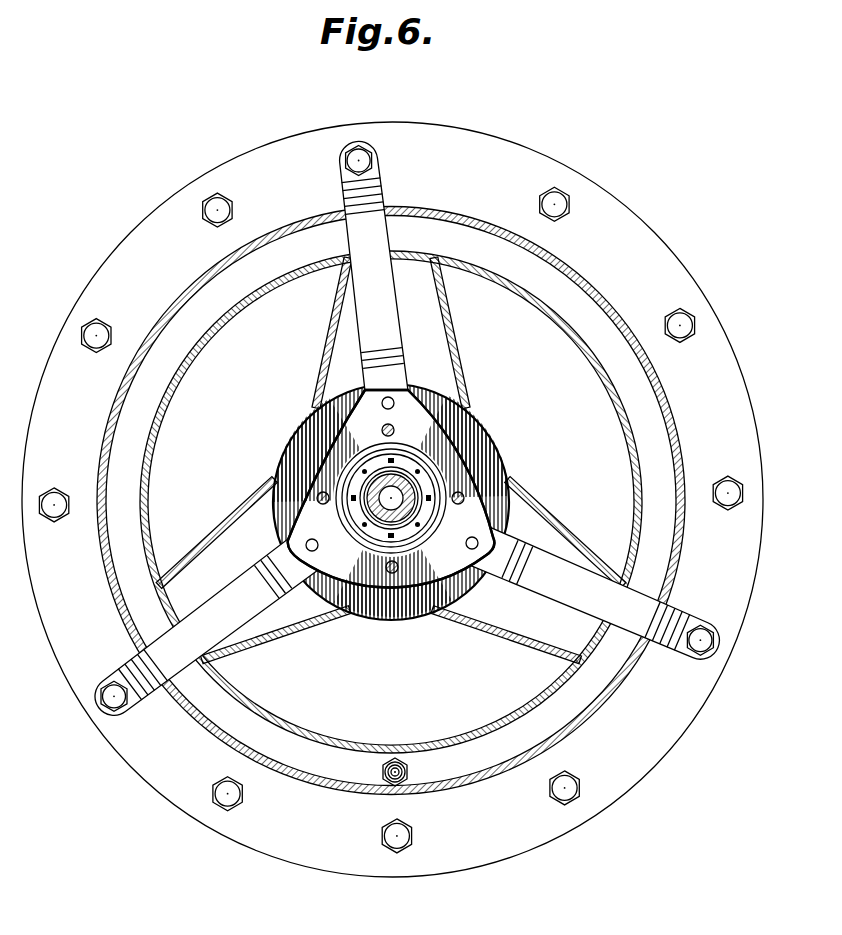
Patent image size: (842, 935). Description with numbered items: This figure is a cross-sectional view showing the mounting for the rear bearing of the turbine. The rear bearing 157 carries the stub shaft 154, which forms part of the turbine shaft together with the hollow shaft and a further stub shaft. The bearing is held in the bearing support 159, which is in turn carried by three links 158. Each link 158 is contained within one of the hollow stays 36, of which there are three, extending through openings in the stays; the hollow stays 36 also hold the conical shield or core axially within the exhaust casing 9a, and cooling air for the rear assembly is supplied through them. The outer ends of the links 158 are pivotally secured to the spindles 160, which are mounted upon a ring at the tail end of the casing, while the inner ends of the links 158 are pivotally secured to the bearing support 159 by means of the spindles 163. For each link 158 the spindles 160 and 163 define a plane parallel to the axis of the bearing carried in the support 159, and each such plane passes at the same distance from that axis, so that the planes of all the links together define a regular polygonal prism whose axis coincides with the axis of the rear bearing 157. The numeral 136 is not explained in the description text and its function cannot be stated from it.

The exhaust casing 9a is at (607, 305).
The hollow stays 36 is at (331, 315).
The tension rod 136 is at (290, 632).
The stub shaft 154 is at (394, 481).
The rear bearing 157 is at (431, 511).
The links 158 is at (388, 317).
The bearing support 159 is at (488, 457).
The spindles 160 is at (368, 159).
The spindles 163 is at (394, 402).